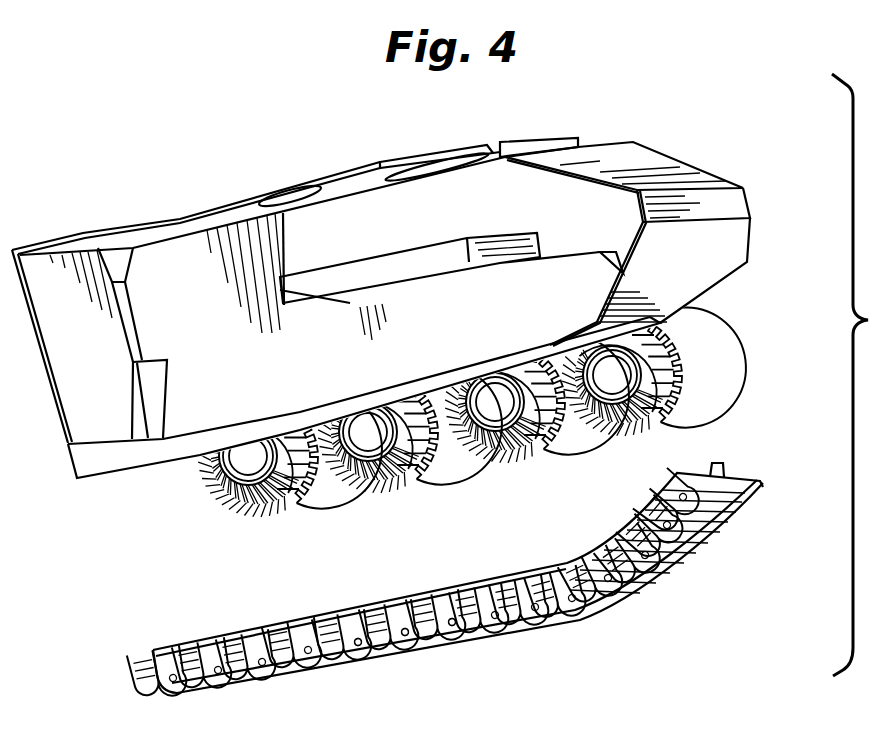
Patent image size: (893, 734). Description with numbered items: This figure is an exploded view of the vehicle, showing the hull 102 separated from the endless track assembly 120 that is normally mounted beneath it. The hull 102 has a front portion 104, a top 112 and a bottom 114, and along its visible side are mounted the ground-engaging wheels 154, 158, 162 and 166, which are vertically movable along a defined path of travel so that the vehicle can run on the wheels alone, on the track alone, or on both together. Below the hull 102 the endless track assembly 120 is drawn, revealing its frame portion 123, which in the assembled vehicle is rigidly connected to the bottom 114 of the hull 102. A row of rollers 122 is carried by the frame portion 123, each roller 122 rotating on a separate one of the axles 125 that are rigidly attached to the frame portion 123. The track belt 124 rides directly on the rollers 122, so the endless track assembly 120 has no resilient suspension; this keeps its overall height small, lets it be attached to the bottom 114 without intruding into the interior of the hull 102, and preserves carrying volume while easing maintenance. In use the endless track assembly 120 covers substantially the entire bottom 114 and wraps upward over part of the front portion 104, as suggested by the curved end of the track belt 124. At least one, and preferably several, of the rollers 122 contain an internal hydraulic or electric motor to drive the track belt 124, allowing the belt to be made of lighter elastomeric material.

The hull 102 is at (687, 157).
The front portion 104 is at (737, 203).
The top 112 is at (338, 172).
The bottom 114 is at (173, 463).
The endless track assembly 120 is at (743, 475).
The rollers 122 is at (565, 622).
The frame portion 123 is at (303, 630).
The track belt 124 is at (707, 548).
The axles 125 is at (452, 626).
The wheel 154 is at (687, 343).
The wheel 158 is at (530, 460).
The wheel 162 is at (407, 497).
The wheel 166 is at (287, 510).